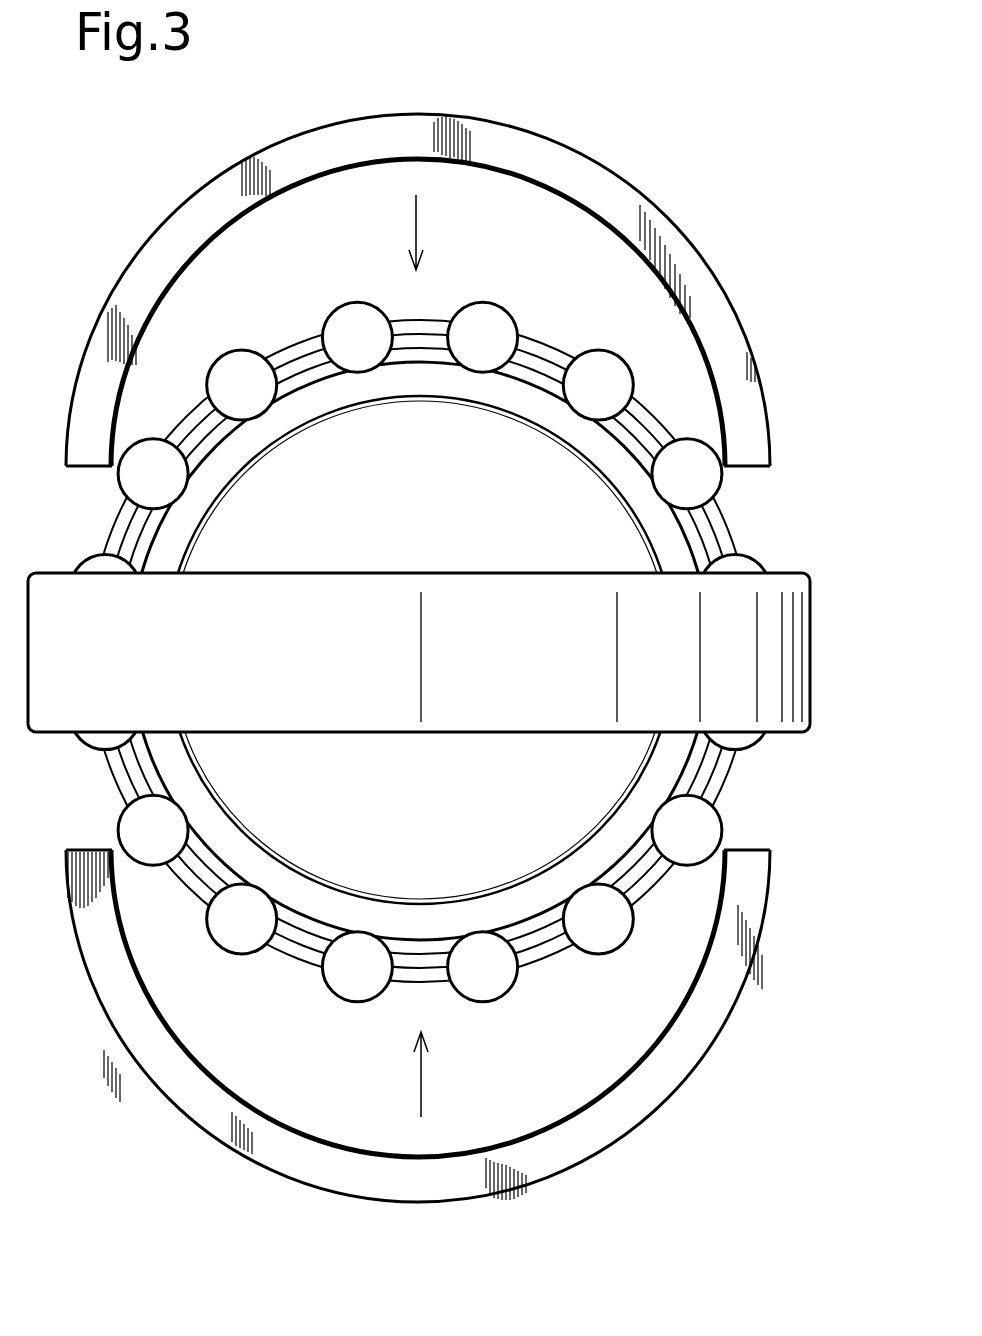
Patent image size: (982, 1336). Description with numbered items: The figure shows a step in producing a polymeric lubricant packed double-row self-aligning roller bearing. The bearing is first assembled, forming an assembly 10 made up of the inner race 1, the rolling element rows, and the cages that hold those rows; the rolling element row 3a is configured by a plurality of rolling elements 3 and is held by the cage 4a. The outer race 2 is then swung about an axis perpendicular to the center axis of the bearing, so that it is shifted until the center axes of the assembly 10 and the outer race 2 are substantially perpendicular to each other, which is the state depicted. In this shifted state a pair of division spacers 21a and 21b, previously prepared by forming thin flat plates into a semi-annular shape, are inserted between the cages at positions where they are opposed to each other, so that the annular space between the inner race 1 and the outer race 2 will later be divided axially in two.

The inner race 1 is at (612, 493).
The outer race 2 is at (805, 630).
The rolling elements 3 is at (357, 312).
The rolling element row 3a is at (233, 342).
The cage 4a is at (712, 773).
The assembly 10 is at (460, 607).
The division spacer 21a is at (507, 140).
The division spacer 21b is at (622, 1117).